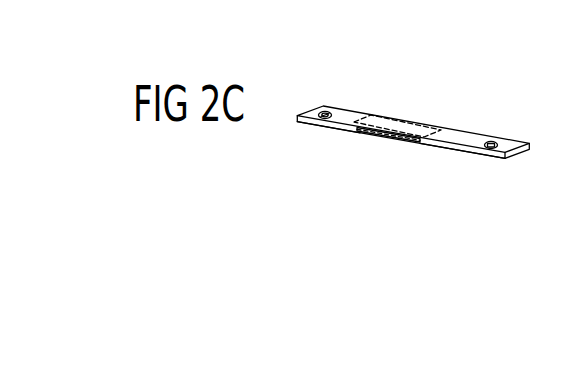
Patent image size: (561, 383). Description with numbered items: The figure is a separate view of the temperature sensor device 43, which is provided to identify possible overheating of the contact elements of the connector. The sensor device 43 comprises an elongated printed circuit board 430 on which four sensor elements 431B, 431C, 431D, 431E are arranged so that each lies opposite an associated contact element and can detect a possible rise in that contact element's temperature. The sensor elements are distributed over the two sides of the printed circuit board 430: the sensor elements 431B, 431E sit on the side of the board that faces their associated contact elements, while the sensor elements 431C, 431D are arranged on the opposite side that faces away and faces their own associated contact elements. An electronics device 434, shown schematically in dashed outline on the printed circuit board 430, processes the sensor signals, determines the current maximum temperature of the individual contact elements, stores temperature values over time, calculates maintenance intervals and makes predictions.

The sensor device 43 is at (427, 102).
The printed circuit board 430 is at (424, 146).
The sensor element 431B is at (323, 114).
The sensor element 431C is at (356, 142).
The sensor element 431D is at (449, 158).
The sensor element 431E is at (487, 148).
The electronics device 434 is at (386, 123).